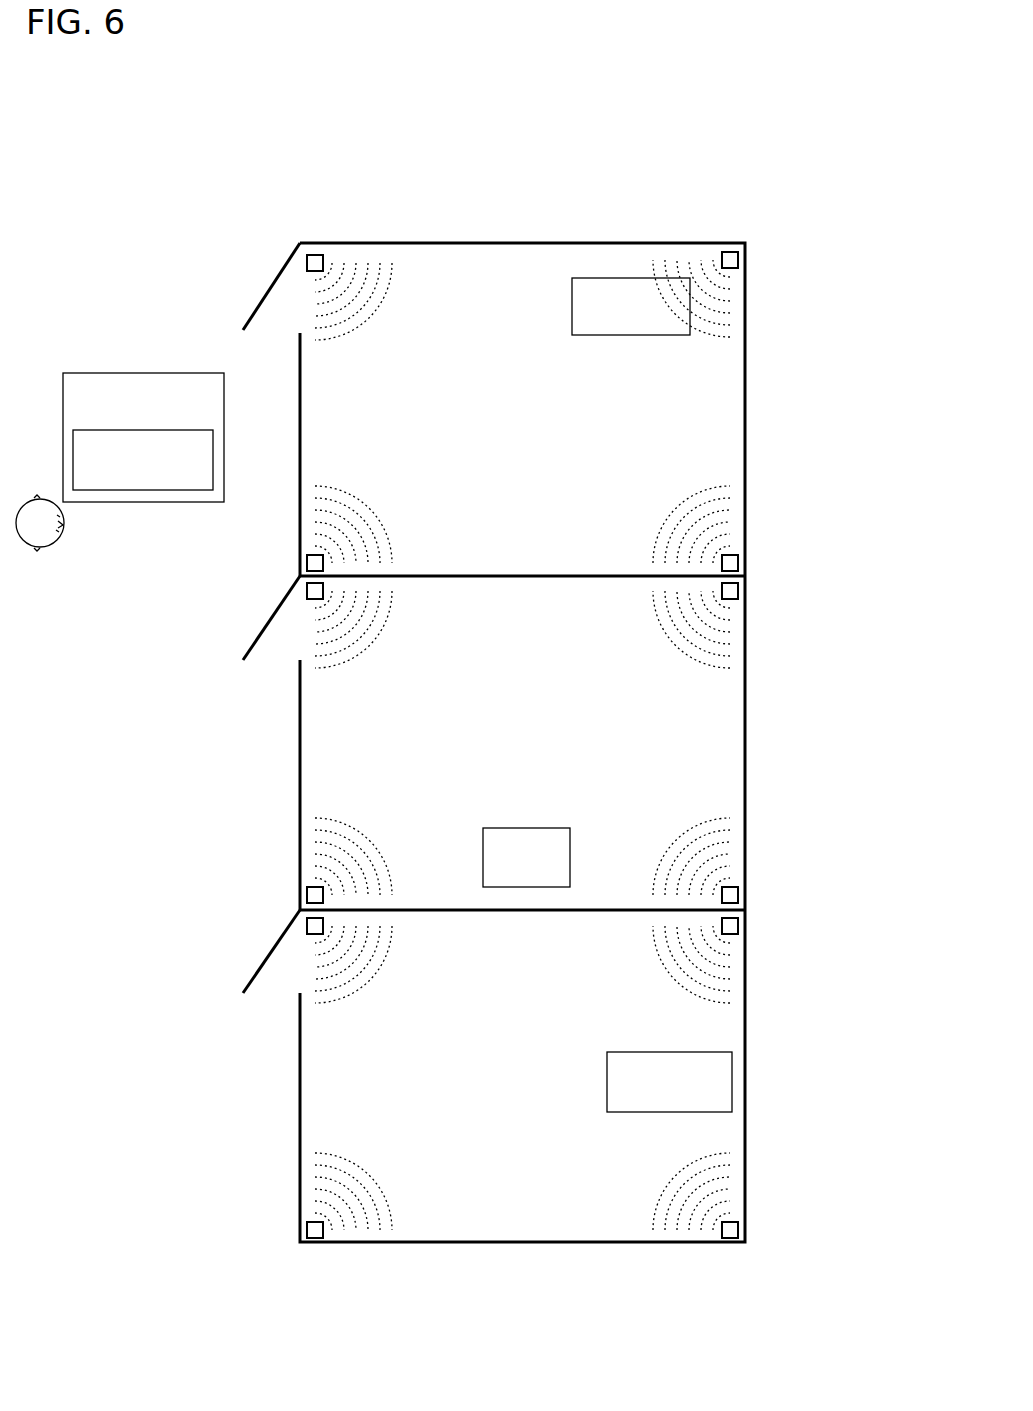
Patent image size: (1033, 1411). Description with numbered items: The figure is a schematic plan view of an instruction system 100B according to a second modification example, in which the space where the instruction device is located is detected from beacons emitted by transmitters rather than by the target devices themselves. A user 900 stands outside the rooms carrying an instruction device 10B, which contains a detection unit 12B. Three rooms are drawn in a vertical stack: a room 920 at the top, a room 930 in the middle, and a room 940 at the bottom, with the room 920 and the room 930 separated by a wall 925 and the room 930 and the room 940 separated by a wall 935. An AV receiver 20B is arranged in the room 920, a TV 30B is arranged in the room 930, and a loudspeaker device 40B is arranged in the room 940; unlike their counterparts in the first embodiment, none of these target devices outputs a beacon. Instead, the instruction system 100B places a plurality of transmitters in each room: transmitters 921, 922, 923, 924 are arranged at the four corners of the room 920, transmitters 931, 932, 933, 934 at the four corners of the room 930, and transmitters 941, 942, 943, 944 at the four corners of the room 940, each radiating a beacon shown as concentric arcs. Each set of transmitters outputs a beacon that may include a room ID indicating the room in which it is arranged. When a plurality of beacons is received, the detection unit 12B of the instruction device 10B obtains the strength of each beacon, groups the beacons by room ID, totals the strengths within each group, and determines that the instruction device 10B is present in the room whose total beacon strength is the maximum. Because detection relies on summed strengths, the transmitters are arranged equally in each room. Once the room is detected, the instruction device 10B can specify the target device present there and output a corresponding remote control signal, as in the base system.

The instruction system 100B is at (803, 114).
The instruction device 10B is at (145, 373).
The detection unit 12B is at (145, 430).
The AV receiver 20B is at (620, 278).
The TV 30B is at (570, 828).
The loudspeaker device 40B is at (732, 1110).
The user 900 is at (57, 545).
The room 920 is at (745, 362).
The transmitter 921 is at (322, 270).
The transmitter 922 is at (730, 270).
The transmitter 923 is at (325, 555).
The transmitter 924 is at (722, 556).
The wall 925 is at (478, 576).
The room 930 is at (745, 738).
The transmitter 931 is at (322, 600).
The transmitter 932 is at (730, 600).
The transmitter 933 is at (325, 887).
The transmitter 934 is at (722, 887).
The wall 935 is at (592, 910).
The room 940 is at (745, 1030).
The transmitter 941 is at (322, 934).
The transmitter 942 is at (730, 935).
The transmitter 943 is at (324, 1222).
The transmitter 944 is at (722, 1223).